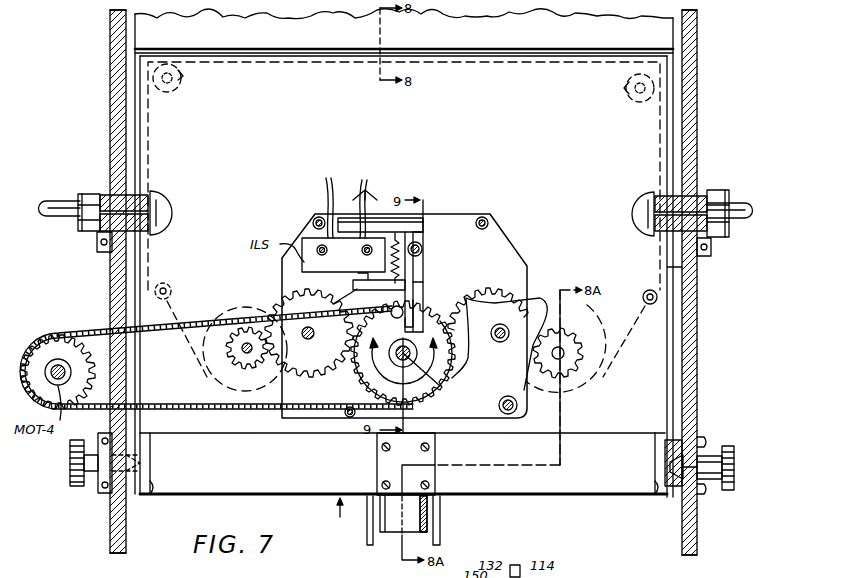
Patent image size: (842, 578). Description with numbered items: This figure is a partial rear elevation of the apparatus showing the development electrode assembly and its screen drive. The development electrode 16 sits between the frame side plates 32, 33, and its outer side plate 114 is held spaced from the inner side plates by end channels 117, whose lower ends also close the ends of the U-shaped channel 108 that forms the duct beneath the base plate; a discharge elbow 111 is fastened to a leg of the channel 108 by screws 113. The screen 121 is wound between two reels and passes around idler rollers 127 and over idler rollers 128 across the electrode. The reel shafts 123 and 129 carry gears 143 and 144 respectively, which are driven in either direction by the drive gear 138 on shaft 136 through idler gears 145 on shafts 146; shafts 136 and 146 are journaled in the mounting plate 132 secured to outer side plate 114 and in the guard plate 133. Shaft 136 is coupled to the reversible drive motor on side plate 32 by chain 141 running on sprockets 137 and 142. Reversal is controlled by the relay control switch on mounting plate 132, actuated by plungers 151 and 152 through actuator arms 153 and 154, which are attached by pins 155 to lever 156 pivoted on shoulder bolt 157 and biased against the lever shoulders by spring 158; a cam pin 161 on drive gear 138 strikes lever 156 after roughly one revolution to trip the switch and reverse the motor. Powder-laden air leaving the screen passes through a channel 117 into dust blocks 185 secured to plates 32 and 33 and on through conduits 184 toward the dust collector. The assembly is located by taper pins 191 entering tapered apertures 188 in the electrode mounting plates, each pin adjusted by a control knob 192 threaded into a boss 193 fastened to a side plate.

The side plate 32 is at (111, 80).
The side plate 33 is at (697, 89).
The outer side plate 114 is at (683, 362).
The screen 121 is at (404, 176).
The U-shaped channel 108 is at (282, 496).
The idler roller 128 is at (183, 78).
The conduit 184 is at (52, 200).
The dust block 185 is at (91, 193).
The control knob 192 is at (735, 467).
The threaded boss 193 is at (697, 437).
The tapered aperture 188 is at (668, 462).
The taper pin 191 is at (668, 478).
The end channel 117 is at (150, 494).
The mounting plate 132 is at (500, 225).
The plunger 151 is at (350, 192).
The actuator arm 153 is at (374, 215).
The plunger 152 is at (357, 283).
The pin 155 is at (424, 220).
The spring 158 is at (425, 232).
The shoulder bolt 157 is at (423, 247).
The lever 156 is at (425, 261).
The drive gear 138 is at (424, 302).
The actuator arm 154 is at (333, 303).
The chain 141 is at (175, 409).
The sprocket 142 is at (62, 346).
The gear 144 is at (232, 340).
The shaft 129 is at (250, 360).
The idler gear 145 is at (274, 300).
The shaft 146 is at (308, 339).
The idler roller 127 is at (171, 291).
The shaft 136 is at (409, 353).
The sprocket 137 is at (430, 396).
The cam pin 161 is at (403, 352).
The guard plate 133 is at (548, 298).
The gear 143 is at (592, 326).
The shaft 123 is at (585, 374).
The screw 113 is at (377, 444).
The discharge elbow 111 is at (391, 535).
The development electrode 16 is at (345, 539).